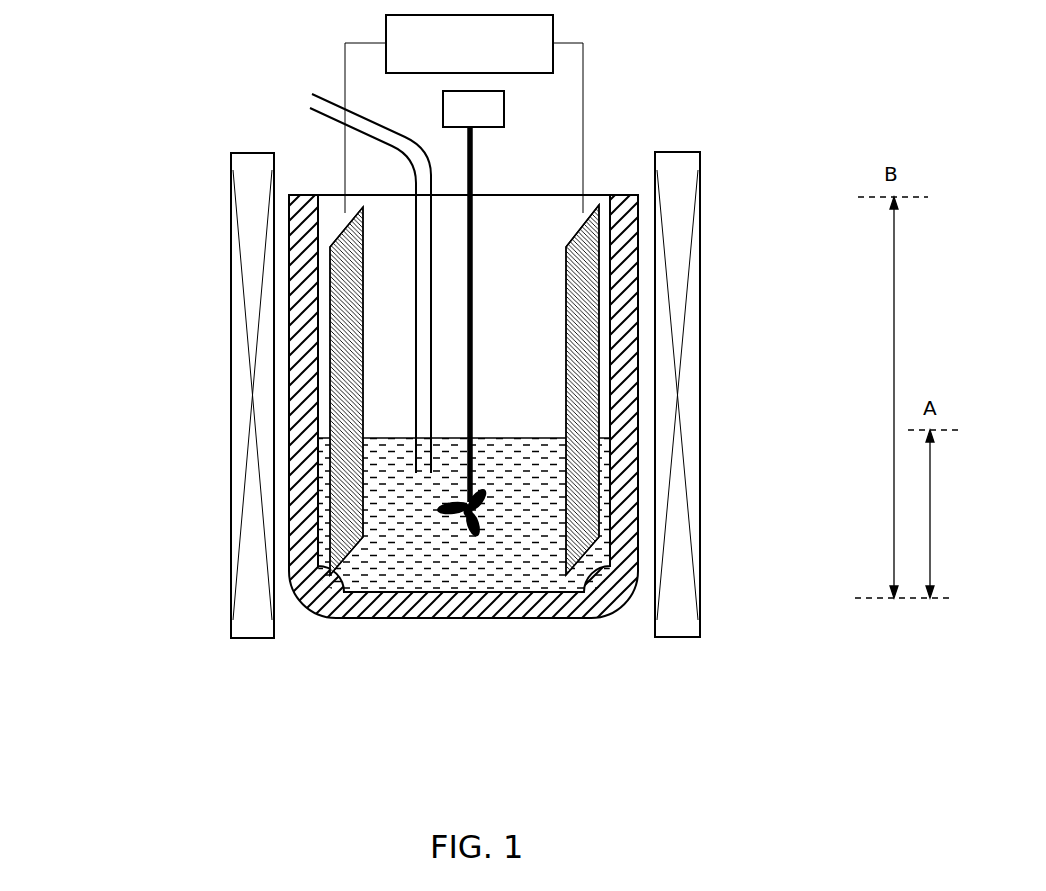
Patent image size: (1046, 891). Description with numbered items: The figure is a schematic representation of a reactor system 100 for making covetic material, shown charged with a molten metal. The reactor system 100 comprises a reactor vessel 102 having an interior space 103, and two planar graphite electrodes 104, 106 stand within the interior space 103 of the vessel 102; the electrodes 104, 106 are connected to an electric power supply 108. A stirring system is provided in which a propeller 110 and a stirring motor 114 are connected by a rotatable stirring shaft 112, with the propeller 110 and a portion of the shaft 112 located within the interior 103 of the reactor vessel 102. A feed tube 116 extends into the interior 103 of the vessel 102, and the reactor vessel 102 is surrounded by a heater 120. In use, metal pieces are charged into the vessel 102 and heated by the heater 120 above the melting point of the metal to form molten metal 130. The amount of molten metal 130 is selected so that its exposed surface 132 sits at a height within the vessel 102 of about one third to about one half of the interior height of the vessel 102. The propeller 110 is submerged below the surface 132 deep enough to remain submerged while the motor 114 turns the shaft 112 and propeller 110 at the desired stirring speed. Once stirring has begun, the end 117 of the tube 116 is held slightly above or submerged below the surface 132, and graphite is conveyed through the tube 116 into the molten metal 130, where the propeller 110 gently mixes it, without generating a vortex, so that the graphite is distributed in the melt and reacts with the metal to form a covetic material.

The reactor system 100 is at (138, 205).
The reactor vessel 102 is at (552, 617).
The interior space 103 is at (527, 321).
The planar graphite electrode 104 is at (342, 390).
The planar graphite electrode 106 is at (579, 352).
The electric power supply 108 is at (398, 37).
The propeller 110 is at (466, 522).
The rotatable stirring shaft 112 is at (473, 178).
The stirring motor 114 is at (498, 107).
The feed tube 116 is at (419, 183).
The end of tube 117 is at (415, 470).
The heater 120 is at (242, 302).
The molten metal 130 is at (545, 502).
The exposed surface 132 is at (557, 438).